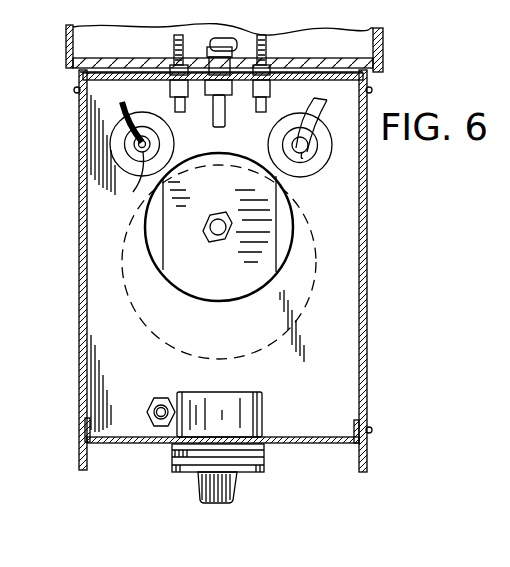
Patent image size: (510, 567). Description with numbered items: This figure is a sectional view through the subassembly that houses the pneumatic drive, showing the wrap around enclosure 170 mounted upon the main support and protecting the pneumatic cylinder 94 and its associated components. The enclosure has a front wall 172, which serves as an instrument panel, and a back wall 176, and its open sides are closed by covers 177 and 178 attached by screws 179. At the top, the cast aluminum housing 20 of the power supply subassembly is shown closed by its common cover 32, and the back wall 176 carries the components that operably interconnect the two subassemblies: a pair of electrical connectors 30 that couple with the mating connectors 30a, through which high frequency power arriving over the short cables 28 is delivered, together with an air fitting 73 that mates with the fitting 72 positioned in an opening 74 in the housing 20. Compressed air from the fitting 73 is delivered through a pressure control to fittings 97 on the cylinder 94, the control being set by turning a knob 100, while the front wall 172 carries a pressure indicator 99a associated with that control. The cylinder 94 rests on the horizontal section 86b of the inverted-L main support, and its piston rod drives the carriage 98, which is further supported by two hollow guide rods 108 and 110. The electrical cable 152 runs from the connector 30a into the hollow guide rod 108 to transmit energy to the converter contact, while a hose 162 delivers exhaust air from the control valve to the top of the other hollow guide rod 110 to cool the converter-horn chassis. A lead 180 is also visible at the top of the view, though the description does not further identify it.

The housing 20 is at (378, 43).
The cover 32 is at (67, 42).
The lead 180 is at (93, 4).
The short cables 28 is at (173, 42).
The connectors 30a is at (181, 60).
The fitting 72 is at (233, 38).
The opening 74 is at (152, 68).
The mating connectors 30 is at (172, 88).
The fitting 73 is at (218, 88).
The electrical cable 152 is at (117, 115).
The guide rod 108 is at (120, 178).
The back wall 176 is at (332, 82).
The hose 162 is at (315, 123).
The guide rod 110 is at (303, 158).
The horizontal section 86b is at (347, 213).
The cover 178 is at (367, 253).
The cover 177 is at (79, 369).
The screws 179 is at (85, 430).
The front wall 172 is at (300, 445).
The wrap around enclosure 170 is at (72, 266).
The fittings 97 is at (205, 228).
The pneumatic cylinder 94 is at (213, 298).
The carriage 98 is at (165, 355).
The pressure indicator 99a is at (243, 410).
The knob 100 is at (208, 482).